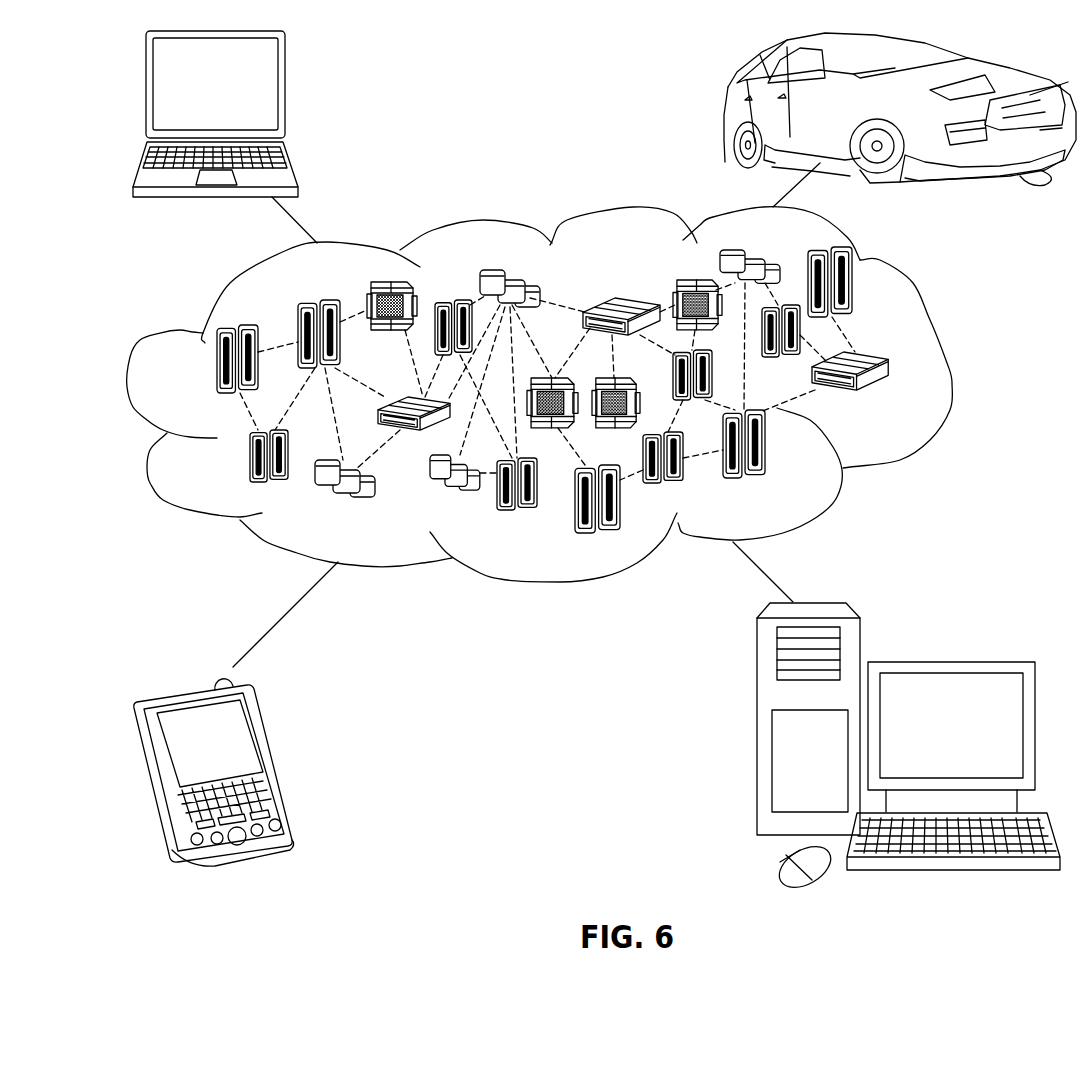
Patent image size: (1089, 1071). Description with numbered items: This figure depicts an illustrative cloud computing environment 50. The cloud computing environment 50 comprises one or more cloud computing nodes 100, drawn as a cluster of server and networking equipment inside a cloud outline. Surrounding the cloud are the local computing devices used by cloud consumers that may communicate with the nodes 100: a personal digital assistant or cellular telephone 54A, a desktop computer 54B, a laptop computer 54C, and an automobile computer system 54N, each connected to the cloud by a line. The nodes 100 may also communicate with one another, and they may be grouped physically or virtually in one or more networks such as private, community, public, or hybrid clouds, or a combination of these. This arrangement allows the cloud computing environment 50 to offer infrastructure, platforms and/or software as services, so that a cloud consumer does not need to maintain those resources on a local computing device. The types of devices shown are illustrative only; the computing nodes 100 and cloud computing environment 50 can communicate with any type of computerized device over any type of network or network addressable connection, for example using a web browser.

The cloud computing environment 50 is at (948, 370).
The cloud computing nodes 100 is at (892, 400).
The personal digital assistant or cellular telephone 54A is at (275, 756).
The desktop computer 54B is at (948, 661).
The laptop computer 54C is at (287, 93).
The automobile computer system 54N is at (729, 110).